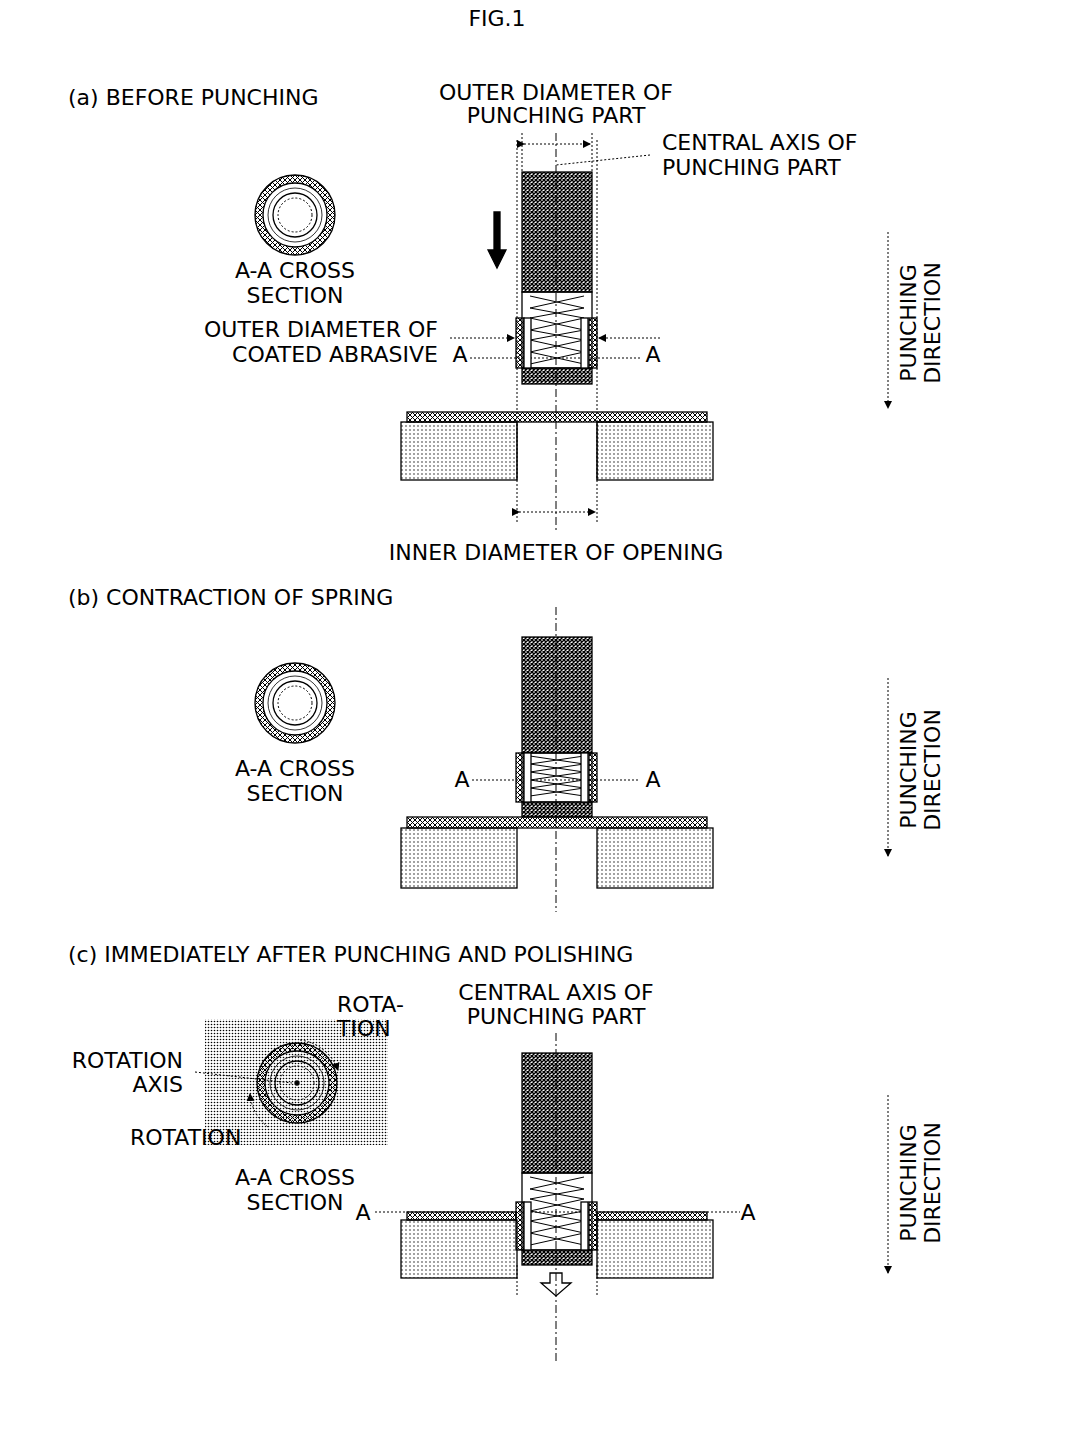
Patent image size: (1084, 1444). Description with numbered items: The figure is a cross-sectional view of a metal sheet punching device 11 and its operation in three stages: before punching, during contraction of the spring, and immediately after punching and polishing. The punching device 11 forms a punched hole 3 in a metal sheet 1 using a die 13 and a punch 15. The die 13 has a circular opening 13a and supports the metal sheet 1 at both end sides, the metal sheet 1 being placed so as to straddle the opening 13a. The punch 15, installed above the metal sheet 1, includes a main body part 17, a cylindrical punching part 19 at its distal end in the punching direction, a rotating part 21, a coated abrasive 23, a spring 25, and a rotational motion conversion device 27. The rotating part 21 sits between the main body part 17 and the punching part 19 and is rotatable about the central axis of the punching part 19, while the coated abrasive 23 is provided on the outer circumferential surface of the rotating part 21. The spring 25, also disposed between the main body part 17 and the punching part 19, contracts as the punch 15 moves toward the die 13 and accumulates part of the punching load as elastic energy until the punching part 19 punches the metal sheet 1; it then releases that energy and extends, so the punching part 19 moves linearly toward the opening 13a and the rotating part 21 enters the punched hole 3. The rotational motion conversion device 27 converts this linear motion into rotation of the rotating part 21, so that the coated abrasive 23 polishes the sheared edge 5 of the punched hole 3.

The metal sheet 1 is at (690, 410).
The punched hole 3 is at (514, 1205).
The sheared edge 5 is at (519, 1286).
The metal sheet punching device 11 is at (752, 265).
The die 13 is at (401, 445).
The opening 13a is at (540, 470).
The punch 15 is at (645, 250).
The main body part 17 is at (592, 218).
The punching part 19 is at (593, 372).
The rotating part 21 is at (595, 328).
The coated abrasive 23 is at (597, 340).
The spring 25 is at (545, 300).
The rotational motion conversion device 27 is at (585, 316).